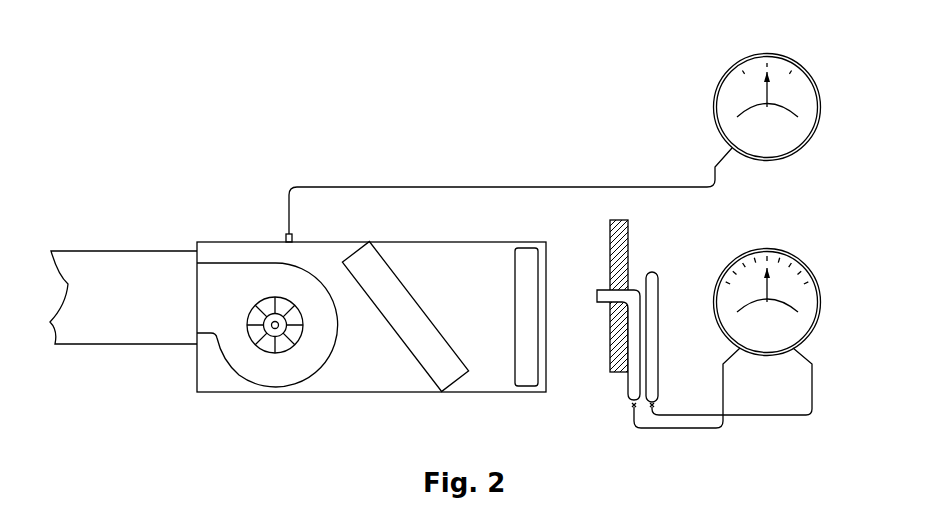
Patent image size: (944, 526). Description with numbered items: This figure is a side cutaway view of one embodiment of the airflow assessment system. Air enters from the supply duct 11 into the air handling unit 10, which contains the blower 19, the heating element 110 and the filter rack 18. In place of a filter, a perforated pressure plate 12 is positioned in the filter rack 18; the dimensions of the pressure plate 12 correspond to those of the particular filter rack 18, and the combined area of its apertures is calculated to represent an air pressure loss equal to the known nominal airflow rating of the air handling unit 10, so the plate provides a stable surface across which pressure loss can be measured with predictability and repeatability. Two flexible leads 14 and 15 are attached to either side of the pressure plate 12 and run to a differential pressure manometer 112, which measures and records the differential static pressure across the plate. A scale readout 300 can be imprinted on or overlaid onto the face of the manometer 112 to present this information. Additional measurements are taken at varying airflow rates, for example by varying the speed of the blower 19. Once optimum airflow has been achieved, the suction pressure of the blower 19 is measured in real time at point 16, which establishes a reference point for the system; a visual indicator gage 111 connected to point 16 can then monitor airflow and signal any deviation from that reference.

The air handling unit 10 is at (360, 396).
The supply duct 11 is at (95, 250).
The perforated pressure plate 12 is at (630, 222).
The flexible lead 14 is at (630, 402).
The flexible lead 15 is at (658, 270).
The point 16 is at (298, 232).
The filter rack 18 is at (534, 280).
The blower 19 is at (233, 372).
The heating element 110 is at (400, 284).
The visual indicator gage 111 is at (770, 47).
The differential pressure manometer 112 is at (770, 246).
The scale readout 300 is at (775, 295).